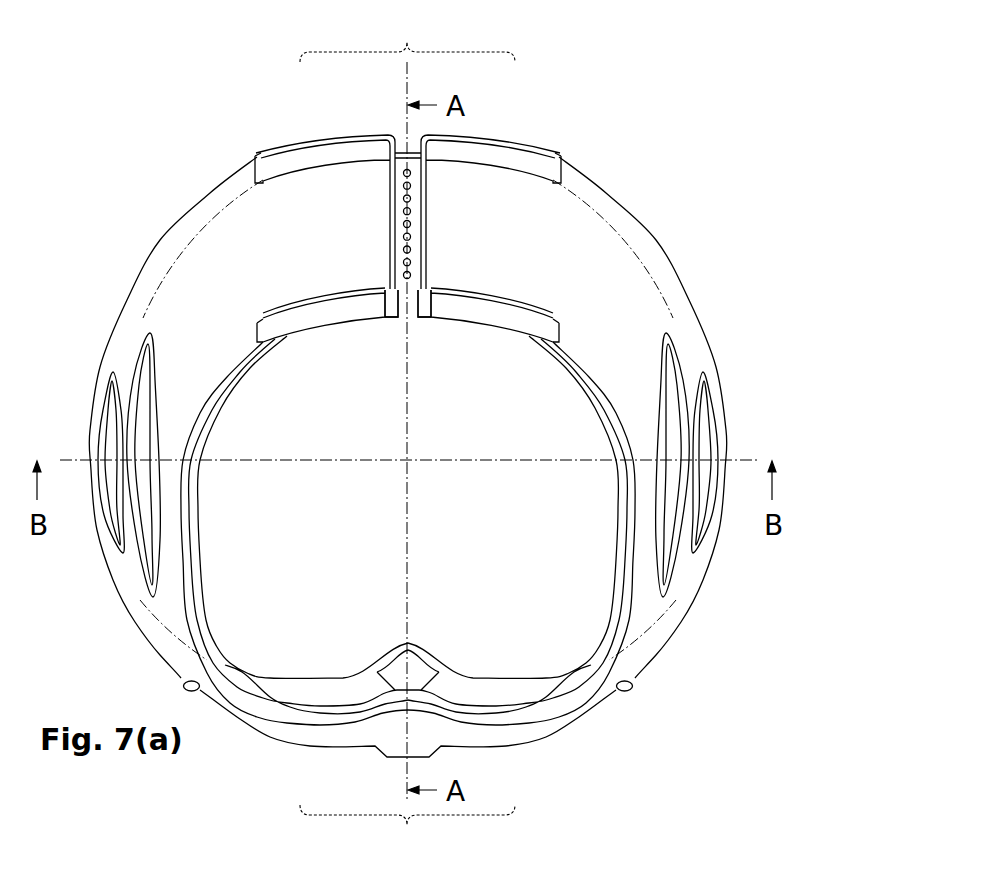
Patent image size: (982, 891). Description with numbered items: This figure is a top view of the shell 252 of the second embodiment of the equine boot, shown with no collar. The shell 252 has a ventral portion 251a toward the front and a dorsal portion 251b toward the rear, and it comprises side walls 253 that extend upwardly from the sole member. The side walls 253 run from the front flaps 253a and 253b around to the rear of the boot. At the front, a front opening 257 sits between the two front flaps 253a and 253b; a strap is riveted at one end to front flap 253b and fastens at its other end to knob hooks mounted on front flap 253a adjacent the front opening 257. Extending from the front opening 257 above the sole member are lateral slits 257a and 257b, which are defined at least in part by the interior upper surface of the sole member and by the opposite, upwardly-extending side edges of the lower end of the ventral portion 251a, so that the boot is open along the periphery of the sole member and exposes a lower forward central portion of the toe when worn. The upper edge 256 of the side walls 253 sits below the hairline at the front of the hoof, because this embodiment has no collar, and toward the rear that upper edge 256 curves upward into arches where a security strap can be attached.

The ventral portion 251a is at (407, 31).
The dorsal portion 251b is at (407, 839).
The shell 252 is at (680, 282).
The side walls 253 is at (215, 300).
The front flap 253a is at (557, 225).
The front flap 253b is at (270, 225).
The upper edge 256 is at (630, 684).
The front opening 257 is at (391, 150).
The lateral slit 257a is at (522, 134).
The lateral slit 257b is at (287, 136).